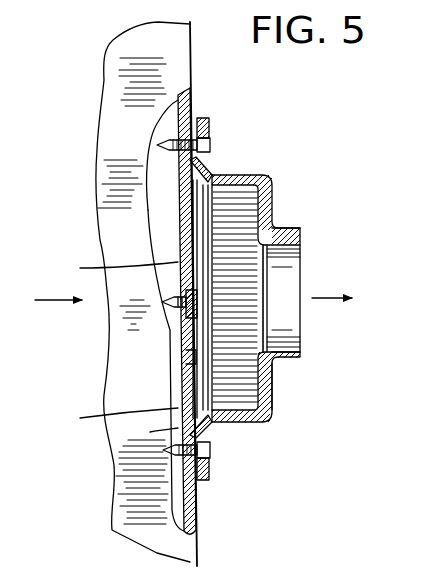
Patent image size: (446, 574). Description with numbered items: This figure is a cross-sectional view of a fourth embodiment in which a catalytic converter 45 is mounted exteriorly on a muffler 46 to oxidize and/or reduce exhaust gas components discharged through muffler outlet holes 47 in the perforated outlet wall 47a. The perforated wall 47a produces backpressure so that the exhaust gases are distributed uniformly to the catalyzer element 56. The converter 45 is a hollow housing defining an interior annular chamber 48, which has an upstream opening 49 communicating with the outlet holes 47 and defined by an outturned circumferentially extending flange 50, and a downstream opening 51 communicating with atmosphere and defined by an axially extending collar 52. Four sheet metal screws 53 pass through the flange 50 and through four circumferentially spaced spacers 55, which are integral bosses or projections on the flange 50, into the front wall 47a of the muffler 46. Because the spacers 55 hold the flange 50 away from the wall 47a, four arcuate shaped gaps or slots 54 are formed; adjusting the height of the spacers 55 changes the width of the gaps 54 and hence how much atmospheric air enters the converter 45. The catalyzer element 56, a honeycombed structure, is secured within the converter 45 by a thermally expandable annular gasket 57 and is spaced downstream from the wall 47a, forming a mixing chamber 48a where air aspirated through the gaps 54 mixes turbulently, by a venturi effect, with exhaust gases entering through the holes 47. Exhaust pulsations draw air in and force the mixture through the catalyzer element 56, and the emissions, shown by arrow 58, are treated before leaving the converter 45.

The catalytic converter 45 is at (268, 165).
The muffler 46 is at (118, 62).
The muffler outlet holes 47 is at (178, 184).
The perforated outlet wall 47a is at (150, 432).
The interior annular chamber 48 is at (300, 257).
The mixing chamber 48a is at (258, 212).
The upstream opening 49 is at (195, 174).
The outturned circumferentially extending flange 50 is at (213, 174).
The downstream opening 51 is at (302, 352).
The axially extending collar 52 is at (282, 362).
The sheet metal screws 53 is at (210, 140).
The arcuate shaped gaps or slots 54 is at (226, 236).
The spacers 55 is at (201, 118).
The catalyzer element 56 is at (263, 293).
The thermally expandable annular gasket 57 is at (260, 425).
The arrow 58 is at (327, 301).